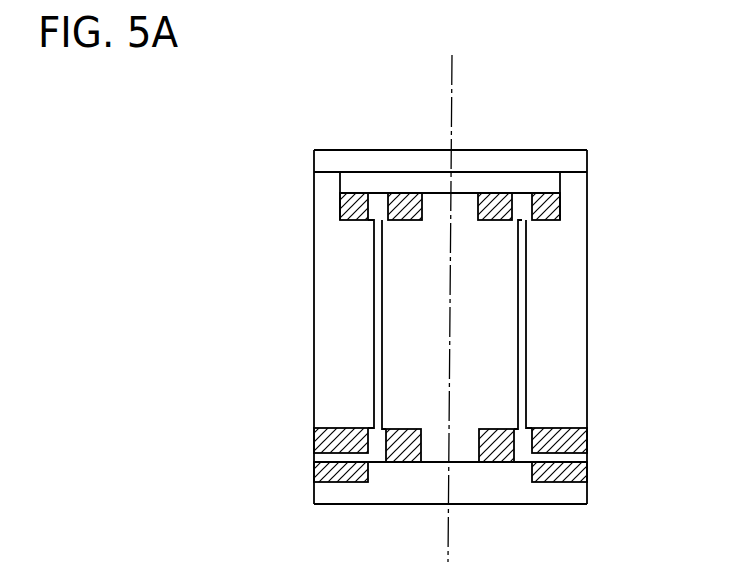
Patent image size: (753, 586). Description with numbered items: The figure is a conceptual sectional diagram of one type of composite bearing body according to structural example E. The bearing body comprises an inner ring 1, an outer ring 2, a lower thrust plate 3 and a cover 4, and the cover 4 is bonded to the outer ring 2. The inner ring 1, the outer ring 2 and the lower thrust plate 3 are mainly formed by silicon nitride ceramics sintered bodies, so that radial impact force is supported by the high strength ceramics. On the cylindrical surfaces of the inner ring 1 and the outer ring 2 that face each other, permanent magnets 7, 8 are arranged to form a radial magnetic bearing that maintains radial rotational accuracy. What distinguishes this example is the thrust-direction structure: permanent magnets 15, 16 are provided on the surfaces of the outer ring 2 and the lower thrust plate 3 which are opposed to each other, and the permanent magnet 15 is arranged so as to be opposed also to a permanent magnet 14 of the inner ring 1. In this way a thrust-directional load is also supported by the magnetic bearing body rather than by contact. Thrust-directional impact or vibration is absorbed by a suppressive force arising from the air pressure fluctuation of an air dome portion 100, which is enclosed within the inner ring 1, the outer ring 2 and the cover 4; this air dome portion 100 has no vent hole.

The air dome portion 100 is at (470, 308).
The inner ring 1 is at (465, 213).
The outer ring 2 is at (563, 275).
The lower thrust plate 3 is at (507, 490).
The cover 4 is at (563, 167).
The permanent magnet 7 is at (497, 190).
The permanent magnet 8 is at (553, 212).
The permanent magnet 14 is at (498, 425).
The permanent magnet 15 is at (567, 425).
The permanent magnet 16 is at (587, 471).